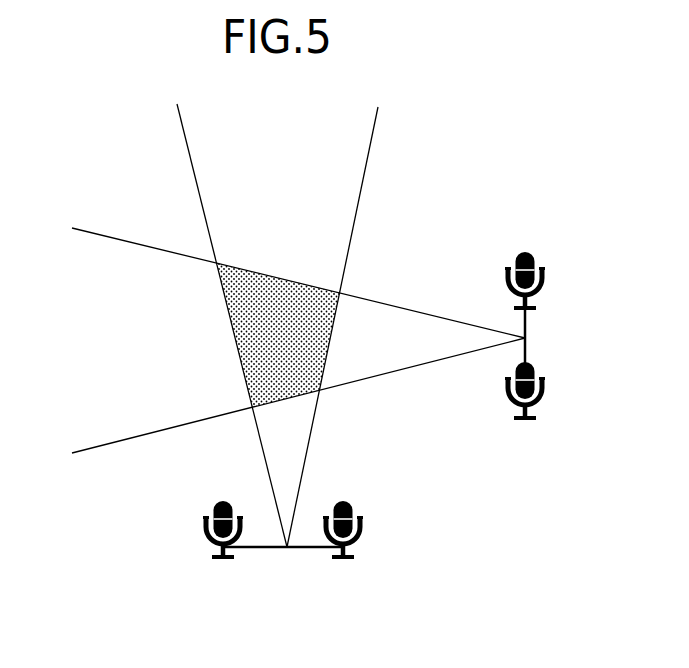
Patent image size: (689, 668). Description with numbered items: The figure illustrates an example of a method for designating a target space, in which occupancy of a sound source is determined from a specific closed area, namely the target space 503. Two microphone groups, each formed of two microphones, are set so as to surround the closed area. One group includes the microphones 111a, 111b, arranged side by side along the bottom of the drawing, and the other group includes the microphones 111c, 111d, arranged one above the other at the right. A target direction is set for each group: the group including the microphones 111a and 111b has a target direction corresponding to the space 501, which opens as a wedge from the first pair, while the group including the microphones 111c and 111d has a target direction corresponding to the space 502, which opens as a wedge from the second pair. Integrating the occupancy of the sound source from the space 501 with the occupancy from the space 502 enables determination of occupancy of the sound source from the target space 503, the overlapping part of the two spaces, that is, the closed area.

The microphone 111a is at (222, 559).
The microphone 111b is at (342, 559).
The microphone 111c is at (540, 402).
The microphone 111d is at (540, 293).
The space 501 is at (298, 448).
The space 502 is at (408, 358).
The target space 503 is at (273, 283).